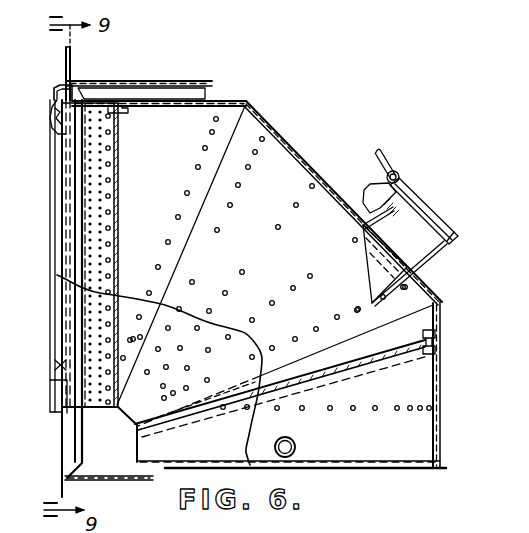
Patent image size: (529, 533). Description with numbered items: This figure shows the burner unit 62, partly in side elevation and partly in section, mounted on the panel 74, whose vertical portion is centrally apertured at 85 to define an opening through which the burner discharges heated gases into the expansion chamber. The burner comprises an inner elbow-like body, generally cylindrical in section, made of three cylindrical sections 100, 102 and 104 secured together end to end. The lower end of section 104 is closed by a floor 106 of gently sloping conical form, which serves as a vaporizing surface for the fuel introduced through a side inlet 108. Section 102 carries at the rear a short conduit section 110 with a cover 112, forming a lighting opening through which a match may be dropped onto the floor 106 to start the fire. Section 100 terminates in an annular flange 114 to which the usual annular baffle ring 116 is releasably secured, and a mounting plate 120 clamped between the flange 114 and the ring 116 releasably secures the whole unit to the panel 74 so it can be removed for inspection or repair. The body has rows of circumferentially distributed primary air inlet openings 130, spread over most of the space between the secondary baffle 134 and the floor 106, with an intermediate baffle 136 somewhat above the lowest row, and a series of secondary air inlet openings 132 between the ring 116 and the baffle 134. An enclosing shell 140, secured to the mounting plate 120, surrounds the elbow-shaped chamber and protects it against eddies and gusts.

The burner unit 62 is at (174, 95).
The panel 74 is at (65, 60).
The aperture 85 is at (56, 120).
The cylindrical section 100 is at (222, 101).
The cylindrical section 102 is at (297, 157).
The cylindrical section 104 is at (441, 368).
The floor 106 is at (327, 459).
The inlet 108 is at (294, 440).
The conduit section 110 is at (417, 259).
The cover 112 is at (430, 211).
The annular flange 114 is at (78, 100).
The annular baffle ring 116 is at (62, 151).
The mounting plate 120 is at (54, 93).
The primary air inlet openings 130 is at (214, 132).
The secondary air inlet openings 132 is at (100, 186).
The secondary baffle 134 is at (121, 137).
The intermediate baffle 136 is at (435, 332).
The enclosing shell 140 is at (128, 482).